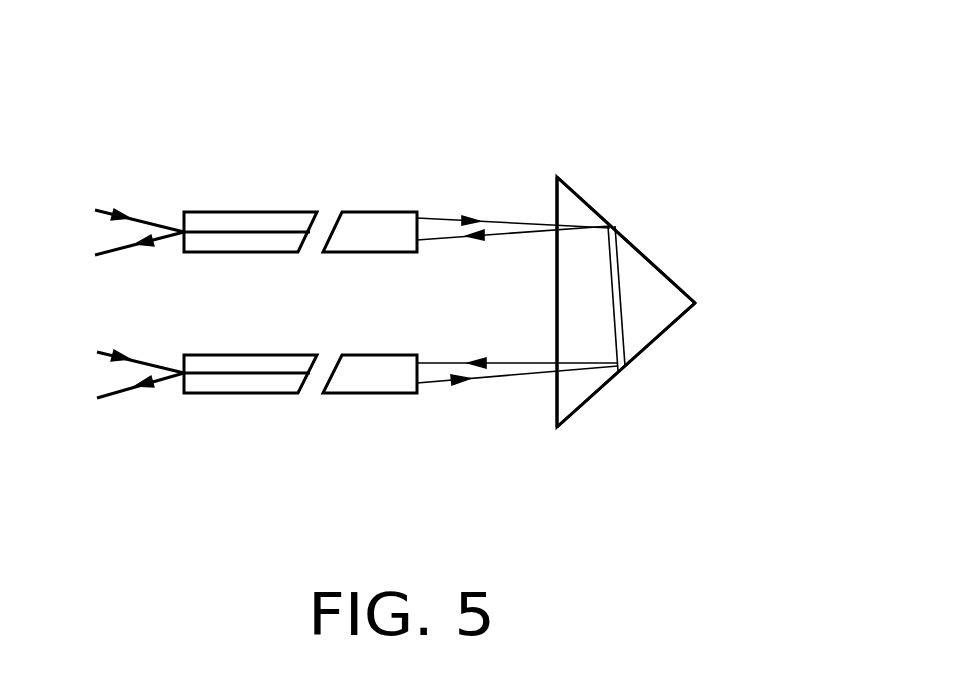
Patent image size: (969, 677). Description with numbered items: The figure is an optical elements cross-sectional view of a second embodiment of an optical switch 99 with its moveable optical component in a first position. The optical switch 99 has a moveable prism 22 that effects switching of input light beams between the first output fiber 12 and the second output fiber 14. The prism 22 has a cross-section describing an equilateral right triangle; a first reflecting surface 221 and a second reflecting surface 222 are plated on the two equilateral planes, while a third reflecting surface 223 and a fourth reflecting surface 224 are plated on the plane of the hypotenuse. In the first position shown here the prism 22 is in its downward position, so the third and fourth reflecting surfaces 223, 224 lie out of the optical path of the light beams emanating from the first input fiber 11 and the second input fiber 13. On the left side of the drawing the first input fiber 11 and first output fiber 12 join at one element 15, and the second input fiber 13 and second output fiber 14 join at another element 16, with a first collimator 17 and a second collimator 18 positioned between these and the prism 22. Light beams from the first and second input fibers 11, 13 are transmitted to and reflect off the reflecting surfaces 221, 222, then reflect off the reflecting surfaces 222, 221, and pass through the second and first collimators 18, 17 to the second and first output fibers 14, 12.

The optical switch 99 is at (492, 40).
The first input fiber 11 is at (121, 209).
The first output fiber 12 is at (118, 252).
The second input fiber 13 is at (118, 350).
The second output fiber 14 is at (118, 395).
The first collimator 15 is at (240, 212).
The second collimator 16 is at (240, 355).
The first collimator 17 is at (370, 212).
The second collimator 18 is at (370, 393).
The prism 22 is at (593, 308).
The first reflecting surface 221 is at (642, 247).
The second reflecting surface 222 is at (648, 347).
The third reflecting surface 223 is at (557, 265).
The fourth reflecting surface 224 is at (556, 394).